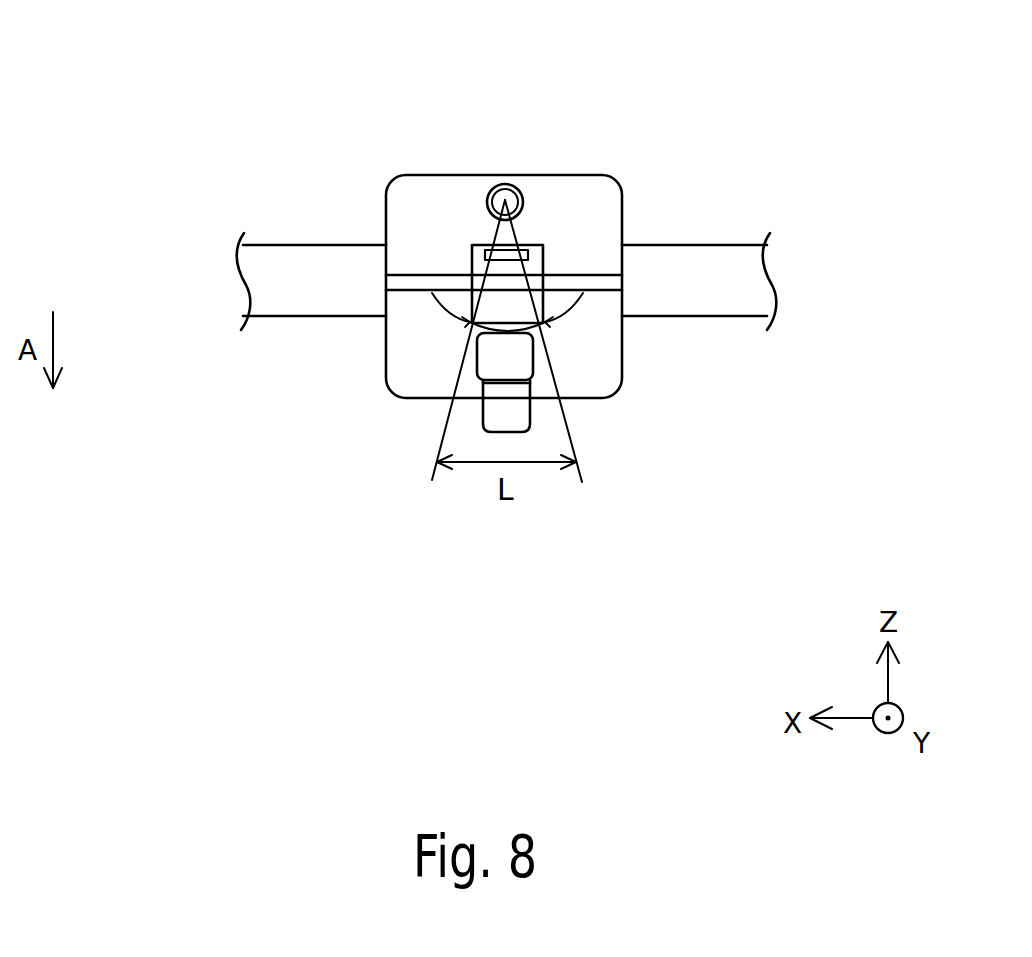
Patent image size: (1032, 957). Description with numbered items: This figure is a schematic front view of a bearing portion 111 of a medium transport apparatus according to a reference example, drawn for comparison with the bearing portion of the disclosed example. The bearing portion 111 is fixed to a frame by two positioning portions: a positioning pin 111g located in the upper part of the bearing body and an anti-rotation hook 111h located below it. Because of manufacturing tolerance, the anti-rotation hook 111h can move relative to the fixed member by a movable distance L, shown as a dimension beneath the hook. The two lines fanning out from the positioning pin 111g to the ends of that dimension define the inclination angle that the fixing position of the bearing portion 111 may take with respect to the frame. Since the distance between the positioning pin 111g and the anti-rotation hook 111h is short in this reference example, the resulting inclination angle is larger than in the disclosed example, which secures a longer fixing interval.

The bearing portion 111 is at (593, 196).
The positioning pin 111g is at (507, 183).
The anti-rotation hook 111h is at (498, 405).